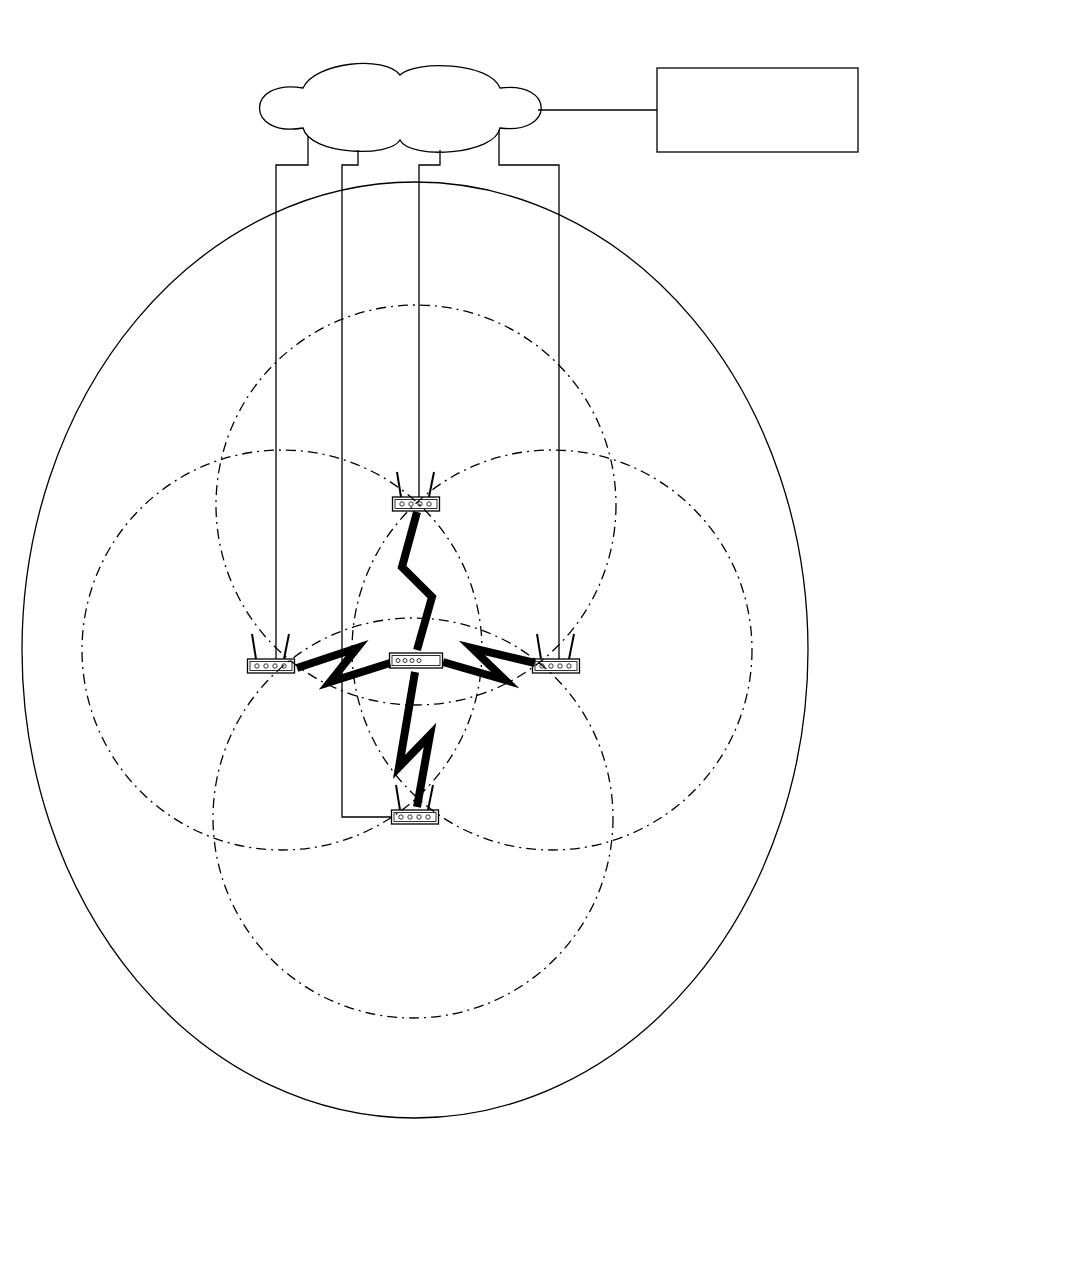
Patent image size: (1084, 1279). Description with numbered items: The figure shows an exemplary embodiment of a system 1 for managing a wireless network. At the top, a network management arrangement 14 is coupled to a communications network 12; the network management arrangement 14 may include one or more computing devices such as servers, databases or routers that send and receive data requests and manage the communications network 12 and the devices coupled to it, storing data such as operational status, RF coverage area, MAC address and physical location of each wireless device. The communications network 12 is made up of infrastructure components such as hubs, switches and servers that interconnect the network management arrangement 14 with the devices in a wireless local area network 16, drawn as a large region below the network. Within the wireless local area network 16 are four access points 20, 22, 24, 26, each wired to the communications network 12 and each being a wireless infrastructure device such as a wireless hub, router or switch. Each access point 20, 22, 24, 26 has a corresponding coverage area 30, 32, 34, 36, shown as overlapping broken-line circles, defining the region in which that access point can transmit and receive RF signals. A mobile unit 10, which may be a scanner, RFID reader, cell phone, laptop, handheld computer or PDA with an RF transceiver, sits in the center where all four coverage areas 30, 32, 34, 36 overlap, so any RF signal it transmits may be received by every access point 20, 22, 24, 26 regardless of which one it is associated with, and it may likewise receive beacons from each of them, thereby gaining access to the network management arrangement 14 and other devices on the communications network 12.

The system 1 is at (788, 25).
The mobile unit 10 is at (417, 675).
The communications network 12 is at (401, 107).
The network management arrangement 14 is at (698, 110).
The wireless local area network 16 is at (415, 650).
The access point 20 is at (274, 668).
The access point 22 is at (556, 668).
The access point 24 is at (415, 818).
The access point 26 is at (457, 495).
The coverage area 30 is at (282, 650).
The coverage area 32 is at (552, 650).
The coverage area 34 is at (413, 818).
The coverage area 36 is at (416, 505).